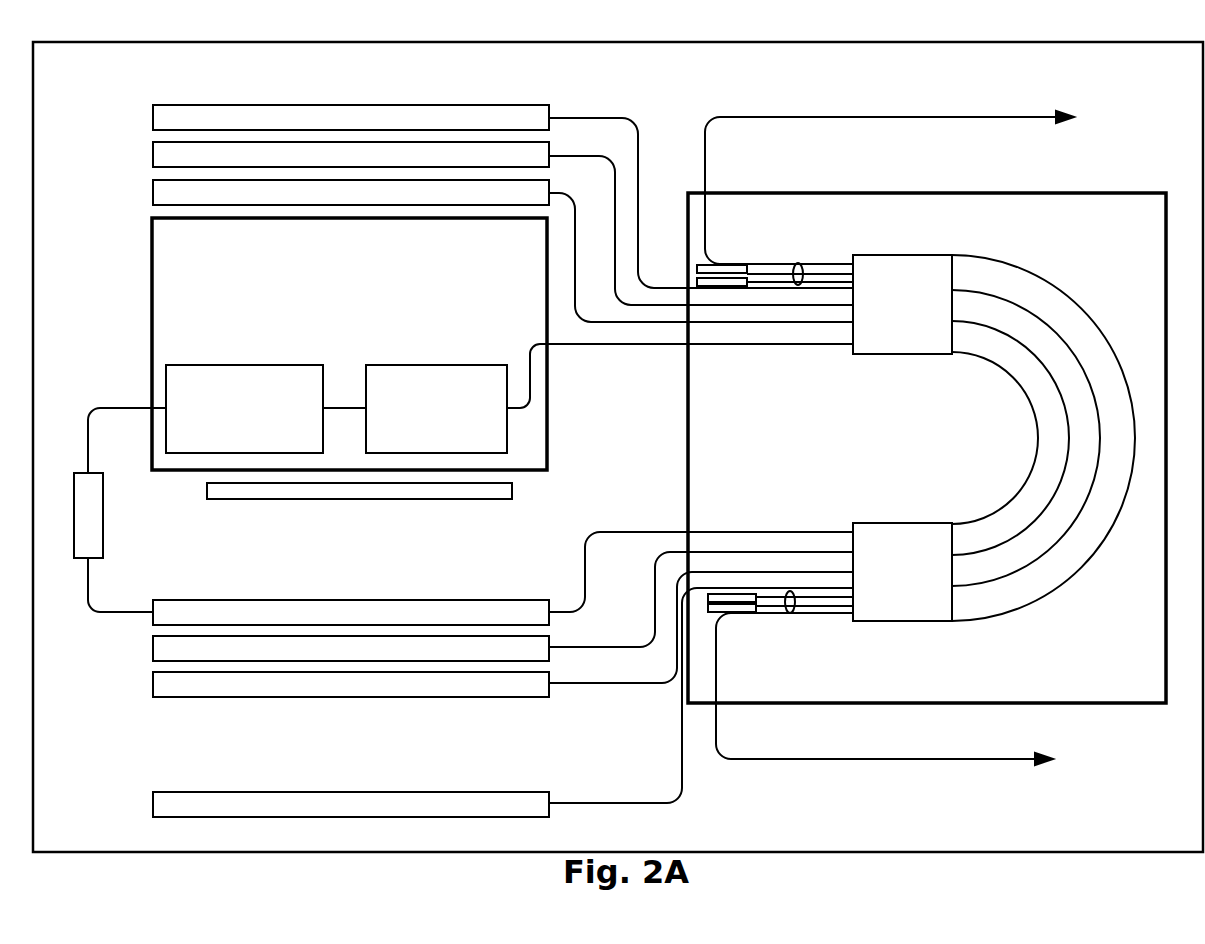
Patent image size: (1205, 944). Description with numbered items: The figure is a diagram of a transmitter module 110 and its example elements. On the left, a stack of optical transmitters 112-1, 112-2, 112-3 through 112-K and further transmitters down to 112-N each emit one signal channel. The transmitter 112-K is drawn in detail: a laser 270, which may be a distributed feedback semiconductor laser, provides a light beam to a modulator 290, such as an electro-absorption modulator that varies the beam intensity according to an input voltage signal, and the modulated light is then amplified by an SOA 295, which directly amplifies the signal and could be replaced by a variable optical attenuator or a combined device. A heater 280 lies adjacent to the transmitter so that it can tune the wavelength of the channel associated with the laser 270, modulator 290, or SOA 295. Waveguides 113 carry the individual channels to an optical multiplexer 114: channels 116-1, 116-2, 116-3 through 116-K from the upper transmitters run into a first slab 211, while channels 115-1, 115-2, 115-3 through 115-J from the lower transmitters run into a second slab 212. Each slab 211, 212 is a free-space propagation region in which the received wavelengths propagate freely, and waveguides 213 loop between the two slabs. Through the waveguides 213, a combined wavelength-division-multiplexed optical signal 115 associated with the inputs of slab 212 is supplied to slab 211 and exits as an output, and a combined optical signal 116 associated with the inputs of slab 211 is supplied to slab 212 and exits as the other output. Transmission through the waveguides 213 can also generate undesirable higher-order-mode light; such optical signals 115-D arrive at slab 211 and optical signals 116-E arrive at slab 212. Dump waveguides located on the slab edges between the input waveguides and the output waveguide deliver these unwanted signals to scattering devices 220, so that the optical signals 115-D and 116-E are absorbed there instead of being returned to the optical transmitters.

The transmitter module 110 is at (105, 61).
The optical transmitter 112-1 is at (151, 119).
The optical transmitter 112-2 is at (151, 156).
The optical transmitter 112-3 is at (151, 194).
The optical transmitter 112-K is at (151, 248).
The optical transmitter 112-N is at (151, 807).
The waveguides 113 is at (713, 794).
The optical multiplexer 114 is at (1074, 181).
The optical signal 115 is at (905, 117).
The signal channel 115-1 is at (660, 544).
The signal channel 115-2 is at (618, 646).
The signal channel 115-3 is at (592, 684).
The signal channel 115-J is at (656, 802).
The undesirable optical signals 115-D is at (800, 264).
The optical signal 116 is at (876, 760).
The signal channel 116-1 is at (572, 118).
The signal channel 116-2 is at (596, 152).
The signal channel 116-3 is at (578, 210).
The signal channel 116-K is at (608, 344).
The undesirable optical signals 116-E is at (796, 604).
The slab 211 is at (862, 362).
The slab 212 is at (870, 512).
The waveguides 213 is at (1091, 303).
The scattering device 220 is at (733, 265).
The laser 270 is at (103, 534).
The heater 280 is at (362, 500).
The modulator 290 is at (244, 409).
The SOA 295 is at (436, 409).